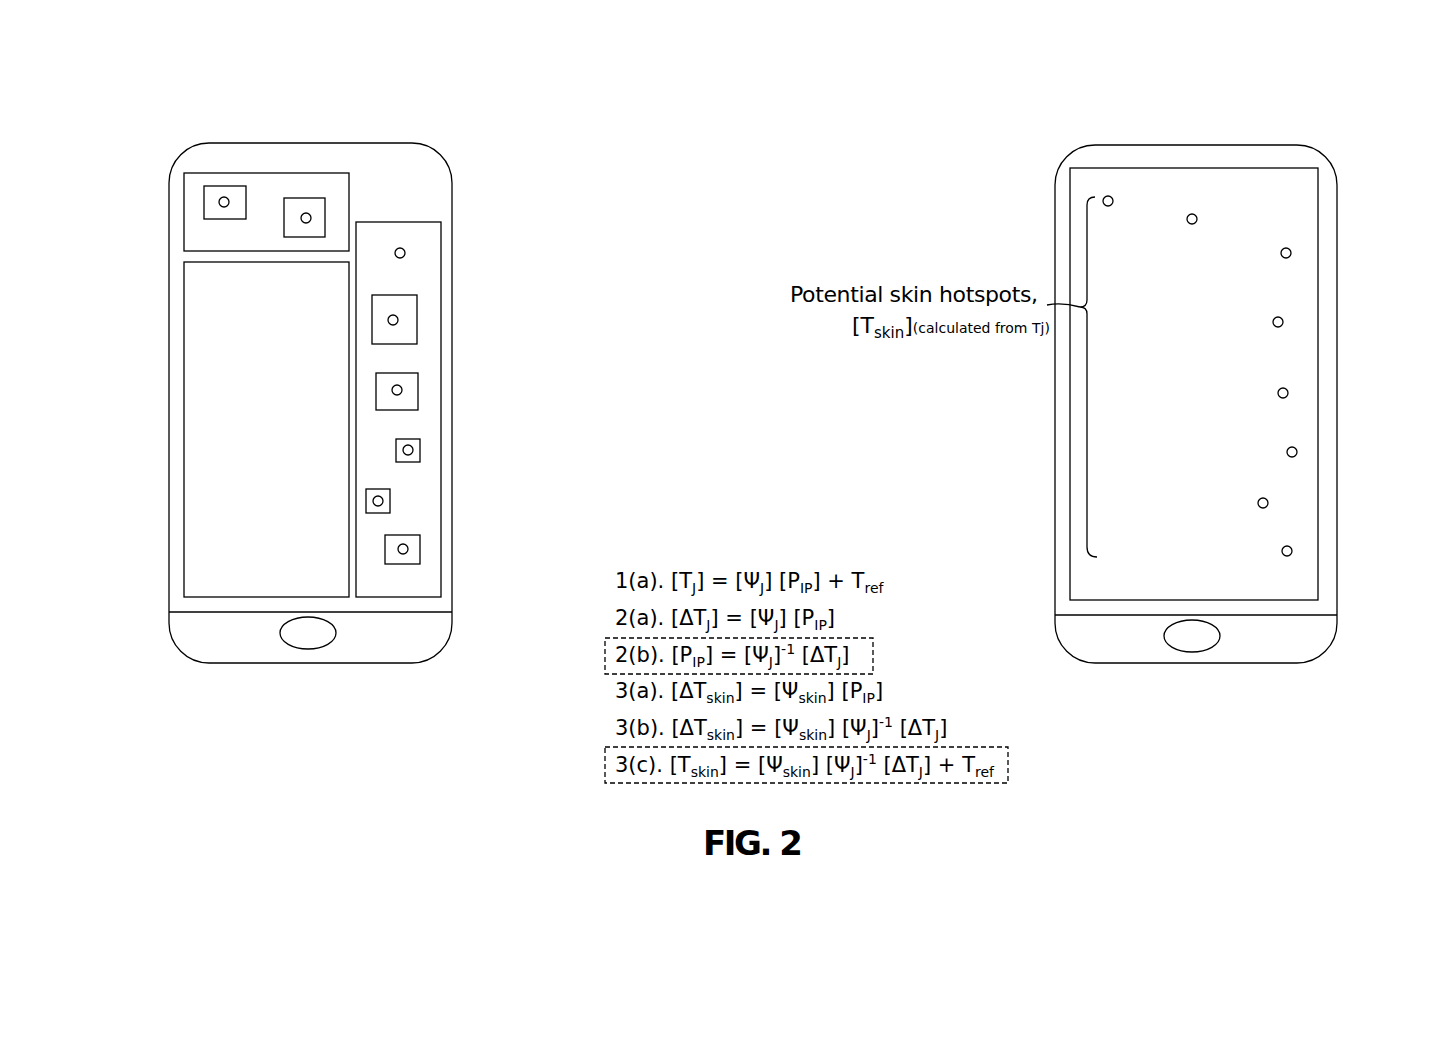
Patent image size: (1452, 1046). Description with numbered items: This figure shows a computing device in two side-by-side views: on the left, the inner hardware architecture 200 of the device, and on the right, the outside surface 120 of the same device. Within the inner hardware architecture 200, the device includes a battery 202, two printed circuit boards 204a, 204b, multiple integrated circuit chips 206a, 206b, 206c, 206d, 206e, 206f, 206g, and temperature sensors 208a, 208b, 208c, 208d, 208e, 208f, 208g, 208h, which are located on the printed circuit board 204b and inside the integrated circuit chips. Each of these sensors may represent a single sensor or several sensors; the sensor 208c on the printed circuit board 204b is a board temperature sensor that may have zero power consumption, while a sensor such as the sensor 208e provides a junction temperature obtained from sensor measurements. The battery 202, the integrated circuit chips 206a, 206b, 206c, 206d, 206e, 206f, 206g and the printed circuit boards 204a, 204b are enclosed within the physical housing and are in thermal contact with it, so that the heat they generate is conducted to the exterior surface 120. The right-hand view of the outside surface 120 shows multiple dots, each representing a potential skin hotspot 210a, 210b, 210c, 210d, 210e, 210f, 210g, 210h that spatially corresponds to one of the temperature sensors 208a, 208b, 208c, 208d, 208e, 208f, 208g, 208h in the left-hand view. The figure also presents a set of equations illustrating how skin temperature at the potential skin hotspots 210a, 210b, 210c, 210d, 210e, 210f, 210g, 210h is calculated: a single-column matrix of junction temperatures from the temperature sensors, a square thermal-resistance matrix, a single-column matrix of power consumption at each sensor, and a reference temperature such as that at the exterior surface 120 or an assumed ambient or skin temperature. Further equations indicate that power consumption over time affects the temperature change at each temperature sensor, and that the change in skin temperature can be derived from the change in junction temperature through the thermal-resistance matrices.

The inner hardware architecture 200 is at (190, 121).
The battery 202 is at (184, 412).
The printed circuit board 204a is at (184, 245).
The printed circuit board 204b is at (427, 222).
The integrated circuit chip 206a is at (206, 212).
The integrated circuit chip 206b is at (311, 212).
The integrated circuit chip 206c is at (417, 305).
The integrated circuit chip 206d is at (418, 380).
The integrated circuit chip 206e is at (420, 445).
The integrated circuit chip 206f is at (390, 497).
The integrated circuit chip 206g is at (420, 545).
The temperature sensor 208a is at (219, 202).
The temperature sensor 208b is at (300, 213).
The temperature sensor 208c is at (405, 253).
The temperature sensor 208d is at (398, 320).
The temperature sensor 208e is at (402, 390).
The temperature sensor 208f is at (413, 450).
The temperature sensor 208g is at (383, 502).
The temperature sensor 208h is at (408, 550).
The outside surface 120 is at (1273, 145).
The potential skin hotspot 210a is at (1108, 196).
The potential skin hotspot 210b is at (1192, 214).
The potential skin hotspot 210c is at (1291, 253).
The potential skin hotspot 210d is at (1283, 322).
The potential skin hotspot 210e is at (1288, 393).
The potential skin hotspot 210f is at (1297, 452).
The potential skin hotspot 210g is at (1268, 503).
The potential skin hotspot 210h is at (1292, 551).